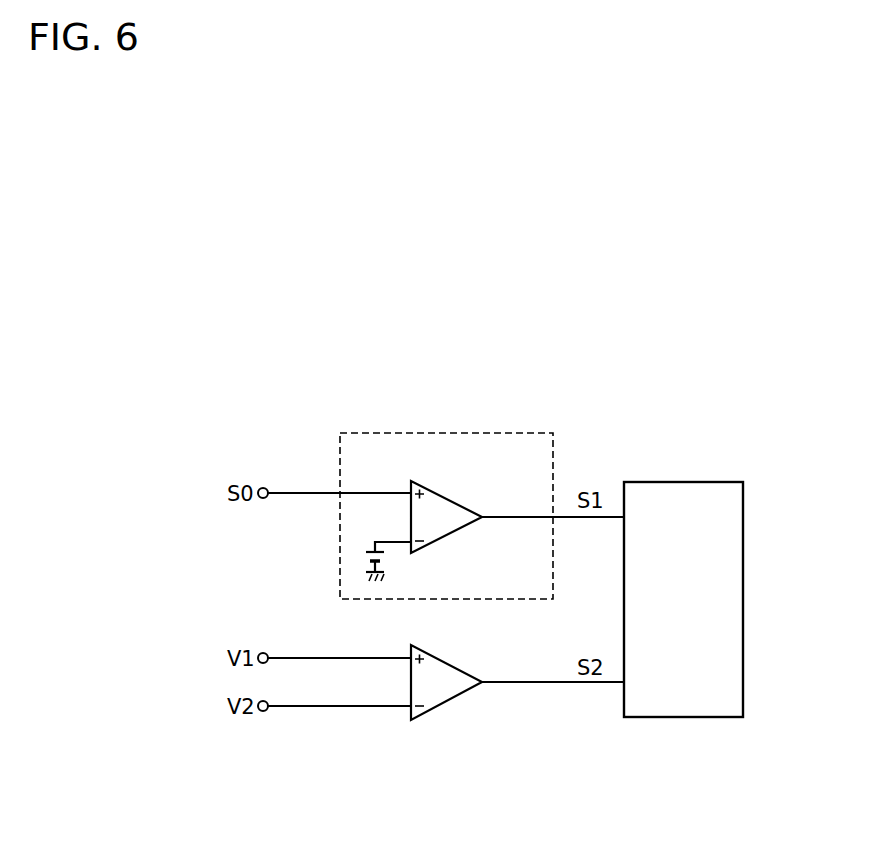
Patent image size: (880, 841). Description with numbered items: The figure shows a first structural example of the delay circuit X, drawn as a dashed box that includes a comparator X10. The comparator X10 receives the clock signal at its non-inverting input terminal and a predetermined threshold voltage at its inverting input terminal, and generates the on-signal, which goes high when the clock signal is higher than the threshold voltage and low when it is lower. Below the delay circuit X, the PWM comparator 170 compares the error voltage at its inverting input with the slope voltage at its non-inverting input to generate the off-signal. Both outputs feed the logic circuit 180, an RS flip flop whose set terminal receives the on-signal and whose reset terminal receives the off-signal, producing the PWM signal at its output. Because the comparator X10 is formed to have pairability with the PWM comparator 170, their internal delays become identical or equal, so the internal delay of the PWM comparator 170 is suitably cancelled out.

The delay circuit X is at (450, 433).
The comparator X10 is at (450, 496).
The PWM comparator 170 is at (452, 660).
The logic circuit 180 is at (687, 480).